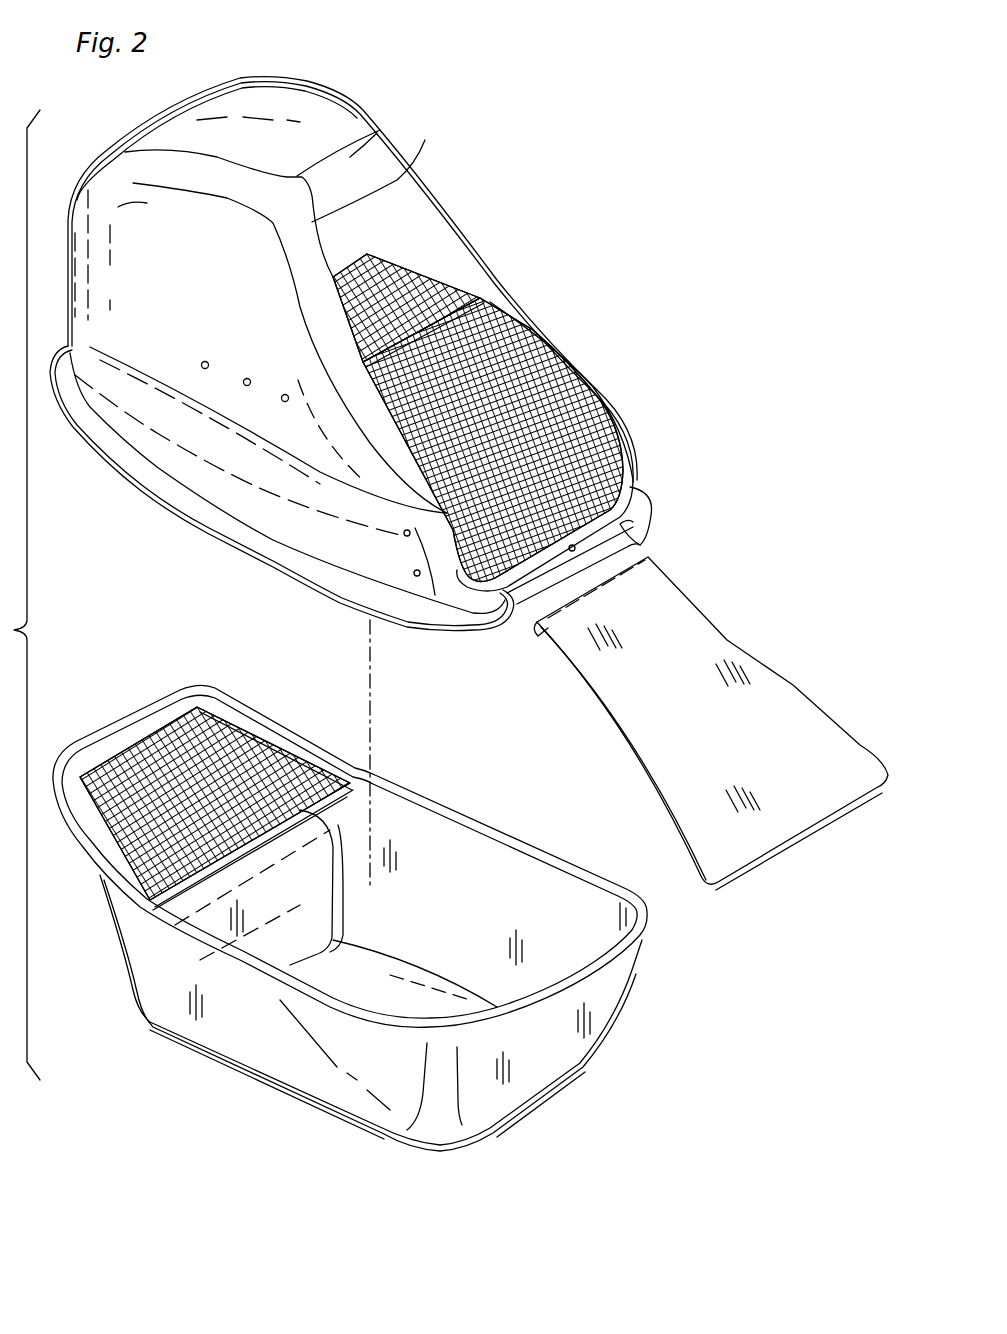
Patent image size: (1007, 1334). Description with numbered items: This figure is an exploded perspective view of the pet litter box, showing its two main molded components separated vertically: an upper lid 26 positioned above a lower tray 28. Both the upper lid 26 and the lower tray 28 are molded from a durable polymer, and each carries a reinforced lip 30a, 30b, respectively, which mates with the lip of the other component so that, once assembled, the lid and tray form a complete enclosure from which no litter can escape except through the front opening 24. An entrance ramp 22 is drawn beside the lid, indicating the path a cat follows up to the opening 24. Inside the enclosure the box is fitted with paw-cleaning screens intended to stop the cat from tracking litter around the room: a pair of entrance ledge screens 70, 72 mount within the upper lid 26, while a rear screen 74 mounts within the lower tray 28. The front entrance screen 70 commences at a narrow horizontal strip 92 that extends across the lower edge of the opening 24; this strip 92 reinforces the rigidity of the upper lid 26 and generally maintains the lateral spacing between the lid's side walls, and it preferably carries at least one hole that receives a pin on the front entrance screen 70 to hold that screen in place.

The entrance ramp 22 is at (740, 640).
The opening 24 is at (458, 275).
The upper lid 26 is at (612, 176).
The lower tray 28 is at (646, 1026).
The reinforced lip 30a is at (134, 507).
The reinforced lip 30b is at (200, 955).
The front entrance screen 70 is at (555, 385).
The entrance ledge screen 72 is at (385, 254).
The rear screen 74 is at (235, 757).
The narrow horizontal strip 92 is at (605, 535).